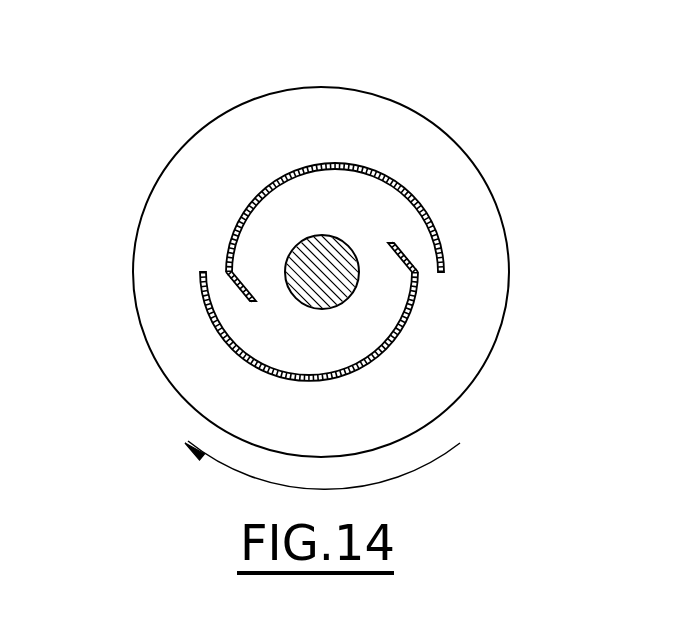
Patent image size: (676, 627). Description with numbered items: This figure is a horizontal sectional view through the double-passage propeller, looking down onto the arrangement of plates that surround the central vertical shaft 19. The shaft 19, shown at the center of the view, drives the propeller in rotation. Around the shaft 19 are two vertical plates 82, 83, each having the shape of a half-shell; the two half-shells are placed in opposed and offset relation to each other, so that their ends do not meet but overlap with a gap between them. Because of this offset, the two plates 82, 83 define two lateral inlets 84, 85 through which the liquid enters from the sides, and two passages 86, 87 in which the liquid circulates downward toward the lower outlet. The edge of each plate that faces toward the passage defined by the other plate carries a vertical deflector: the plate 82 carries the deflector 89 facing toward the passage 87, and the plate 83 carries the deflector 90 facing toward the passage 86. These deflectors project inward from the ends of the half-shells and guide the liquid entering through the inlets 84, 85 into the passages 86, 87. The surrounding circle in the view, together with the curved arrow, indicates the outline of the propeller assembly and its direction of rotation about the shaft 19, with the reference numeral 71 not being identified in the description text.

The housing 71 is at (232, 128).
The shaft 19 is at (340, 287).
The passage 87 is at (295, 196).
The vertical plate 83 is at (393, 182).
The vertical deflector 90 is at (237, 290).
The passage 86 is at (336, 312).
The vertical plate 82 is at (233, 357).
The vertical deflector 89 is at (407, 251).
The lateral inlet 84 is at (214, 277).
The lateral inlet 85 is at (430, 268).